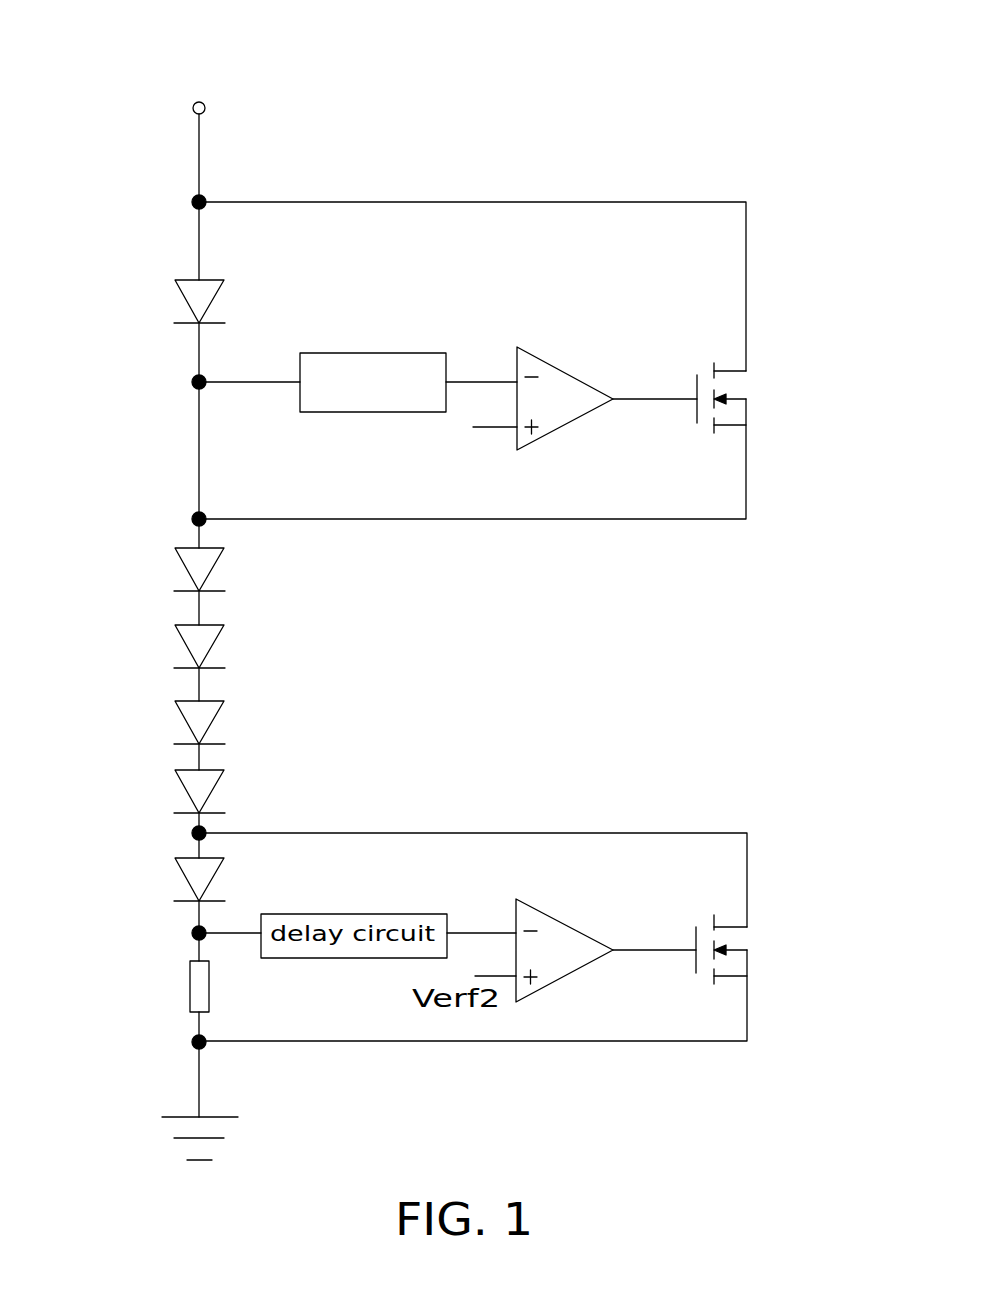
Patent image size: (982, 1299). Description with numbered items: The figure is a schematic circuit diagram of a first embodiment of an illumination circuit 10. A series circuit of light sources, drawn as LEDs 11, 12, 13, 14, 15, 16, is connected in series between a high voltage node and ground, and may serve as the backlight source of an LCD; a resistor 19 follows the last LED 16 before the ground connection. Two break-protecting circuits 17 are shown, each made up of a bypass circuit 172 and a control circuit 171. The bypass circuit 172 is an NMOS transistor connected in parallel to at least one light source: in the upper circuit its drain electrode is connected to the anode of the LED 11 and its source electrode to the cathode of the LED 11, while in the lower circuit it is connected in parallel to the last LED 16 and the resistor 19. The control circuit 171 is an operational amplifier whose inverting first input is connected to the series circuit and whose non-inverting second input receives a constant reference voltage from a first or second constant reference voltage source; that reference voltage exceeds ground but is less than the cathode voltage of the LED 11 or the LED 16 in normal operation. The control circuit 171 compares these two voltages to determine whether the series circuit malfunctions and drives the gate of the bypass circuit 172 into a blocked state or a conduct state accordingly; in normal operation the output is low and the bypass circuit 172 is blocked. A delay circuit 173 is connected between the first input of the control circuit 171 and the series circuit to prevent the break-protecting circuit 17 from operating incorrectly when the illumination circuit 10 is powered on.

The illumination circuit 10 is at (452, 41).
The LED 11 is at (190, 300).
The LED 12 is at (190, 570).
The LED 13 is at (190, 647).
The LED 14 is at (190, 723).
The LED 15 is at (190, 790).
The LED 16 is at (190, 879).
The break-protecting circuit 17 is at (595, 180).
The resistor 19 is at (197, 981).
The control circuit 171 is at (556, 369).
The bypass circuit 172 is at (745, 396).
The delay circuit 173 is at (353, 353).